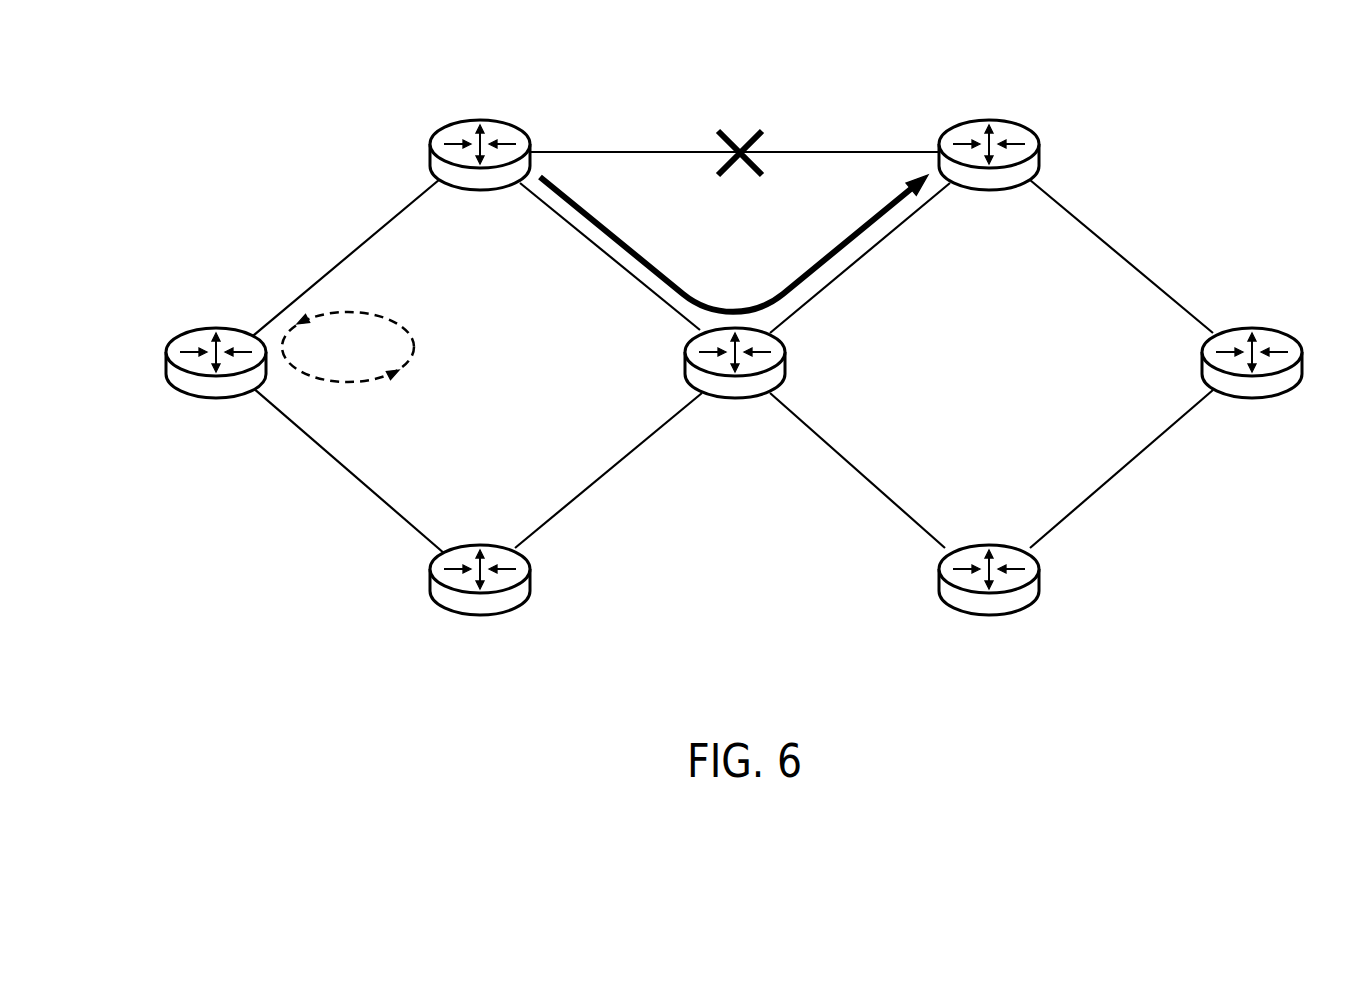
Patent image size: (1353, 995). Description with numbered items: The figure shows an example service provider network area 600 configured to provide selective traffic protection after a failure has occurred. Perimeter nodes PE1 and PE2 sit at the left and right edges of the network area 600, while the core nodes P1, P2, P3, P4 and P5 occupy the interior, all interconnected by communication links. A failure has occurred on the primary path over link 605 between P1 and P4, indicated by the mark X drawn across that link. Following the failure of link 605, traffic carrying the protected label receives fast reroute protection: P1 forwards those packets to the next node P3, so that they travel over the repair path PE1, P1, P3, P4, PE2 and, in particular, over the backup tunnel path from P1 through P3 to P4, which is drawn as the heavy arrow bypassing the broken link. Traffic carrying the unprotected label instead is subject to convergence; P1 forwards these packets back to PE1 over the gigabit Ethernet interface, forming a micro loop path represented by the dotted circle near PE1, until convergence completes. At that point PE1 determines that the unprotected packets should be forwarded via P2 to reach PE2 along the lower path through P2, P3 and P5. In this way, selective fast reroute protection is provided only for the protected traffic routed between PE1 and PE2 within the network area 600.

The network area 600 is at (1022, 64).
The link 605 is at (855, 152).
The core node P1 is at (480, 171).
The core node P2 is at (480, 599).
The core node P3 is at (735, 383).
The core node P4 is at (989, 174).
The core node P5 is at (989, 599).
The perimeter node PE1 is at (216, 383).
The perimeter node PE2 is at (1252, 383).